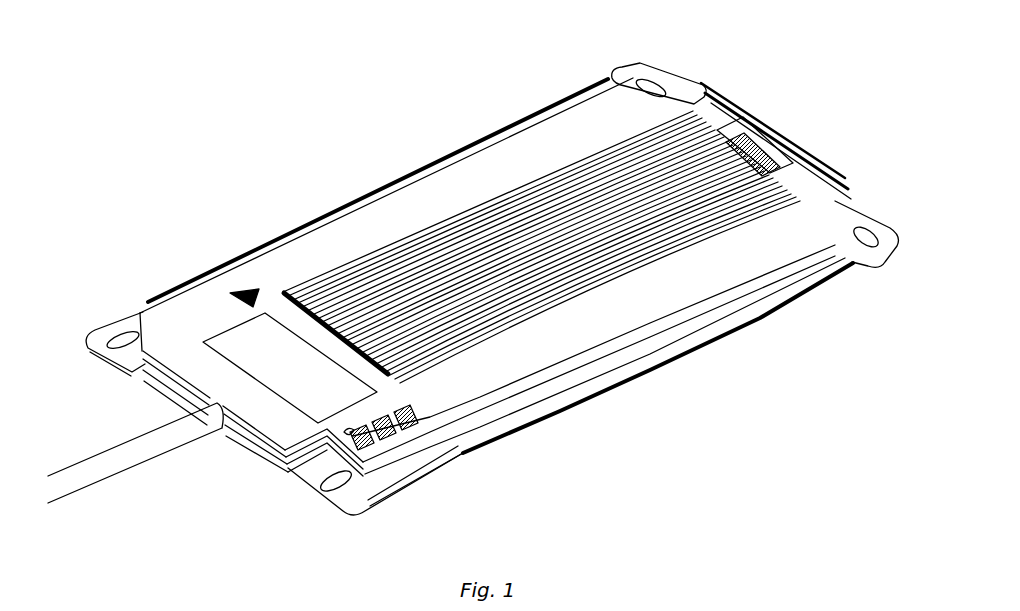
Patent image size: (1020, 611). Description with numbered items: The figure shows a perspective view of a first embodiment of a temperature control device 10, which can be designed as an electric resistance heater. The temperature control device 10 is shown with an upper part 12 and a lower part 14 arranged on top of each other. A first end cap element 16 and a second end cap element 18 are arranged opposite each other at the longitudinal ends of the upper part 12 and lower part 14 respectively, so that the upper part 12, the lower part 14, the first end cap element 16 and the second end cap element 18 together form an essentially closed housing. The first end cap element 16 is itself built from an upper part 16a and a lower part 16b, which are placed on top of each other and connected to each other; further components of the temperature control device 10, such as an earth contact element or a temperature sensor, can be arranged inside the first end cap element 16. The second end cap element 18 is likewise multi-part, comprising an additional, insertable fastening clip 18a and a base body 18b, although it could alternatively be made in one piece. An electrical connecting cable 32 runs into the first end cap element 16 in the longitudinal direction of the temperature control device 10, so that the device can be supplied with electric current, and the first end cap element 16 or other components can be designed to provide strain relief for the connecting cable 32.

The temperature control device 10 is at (130, 66).
The upper part 12 is at (380, 227).
The lower part 14 is at (603, 372).
The first end cap element 16 is at (148, 299).
The upper part of first end cap element 16a is at (140, 352).
The lower part of first end cap element 16b is at (362, 484).
The second end cap element 18 is at (698, 110).
The fastening clip 18a is at (856, 202).
The base body 18b is at (800, 176).
The connecting cable 32 is at (110, 475).